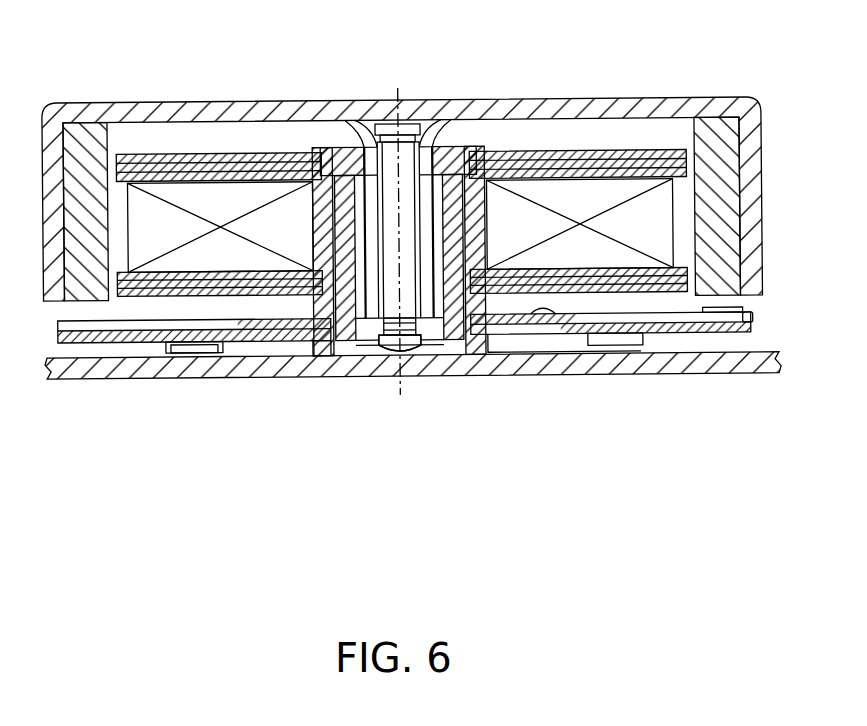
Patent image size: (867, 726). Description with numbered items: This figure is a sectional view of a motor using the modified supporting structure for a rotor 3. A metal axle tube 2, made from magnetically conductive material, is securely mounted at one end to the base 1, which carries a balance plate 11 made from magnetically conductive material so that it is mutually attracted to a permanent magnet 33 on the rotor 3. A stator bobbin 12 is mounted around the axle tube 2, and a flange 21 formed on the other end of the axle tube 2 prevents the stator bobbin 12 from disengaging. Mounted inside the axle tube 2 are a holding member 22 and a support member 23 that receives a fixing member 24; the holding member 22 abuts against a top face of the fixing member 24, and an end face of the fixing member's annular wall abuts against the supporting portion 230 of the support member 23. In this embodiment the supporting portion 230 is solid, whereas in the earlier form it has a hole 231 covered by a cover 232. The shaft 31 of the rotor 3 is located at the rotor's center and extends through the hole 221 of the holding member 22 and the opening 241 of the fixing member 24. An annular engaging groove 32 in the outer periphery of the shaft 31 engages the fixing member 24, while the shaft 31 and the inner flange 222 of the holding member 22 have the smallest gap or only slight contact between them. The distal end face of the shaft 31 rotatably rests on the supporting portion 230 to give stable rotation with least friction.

The base 1 is at (672, 362).
The balance plate 11 is at (537, 313).
The stator bobbin 12 is at (607, 151).
The metal axle tube 2 is at (330, 302).
The flange 21 is at (470, 143).
The holding member 22 is at (355, 185).
The hole 221 is at (367, 207).
The inner flange 222 is at (452, 165).
The support member 23 is at (350, 330).
The supporting portion 230 is at (372, 352).
The hole 231 is at (395, 388).
The cover 232 is at (455, 348).
The fixing member 24 is at (362, 346).
The rotor 3 is at (762, 102).
The shaft 31 is at (412, 277).
The annular engaging groove 32 is at (410, 360).
The opening 241 is at (410, 360).
The permanent magnet 33 is at (725, 197).